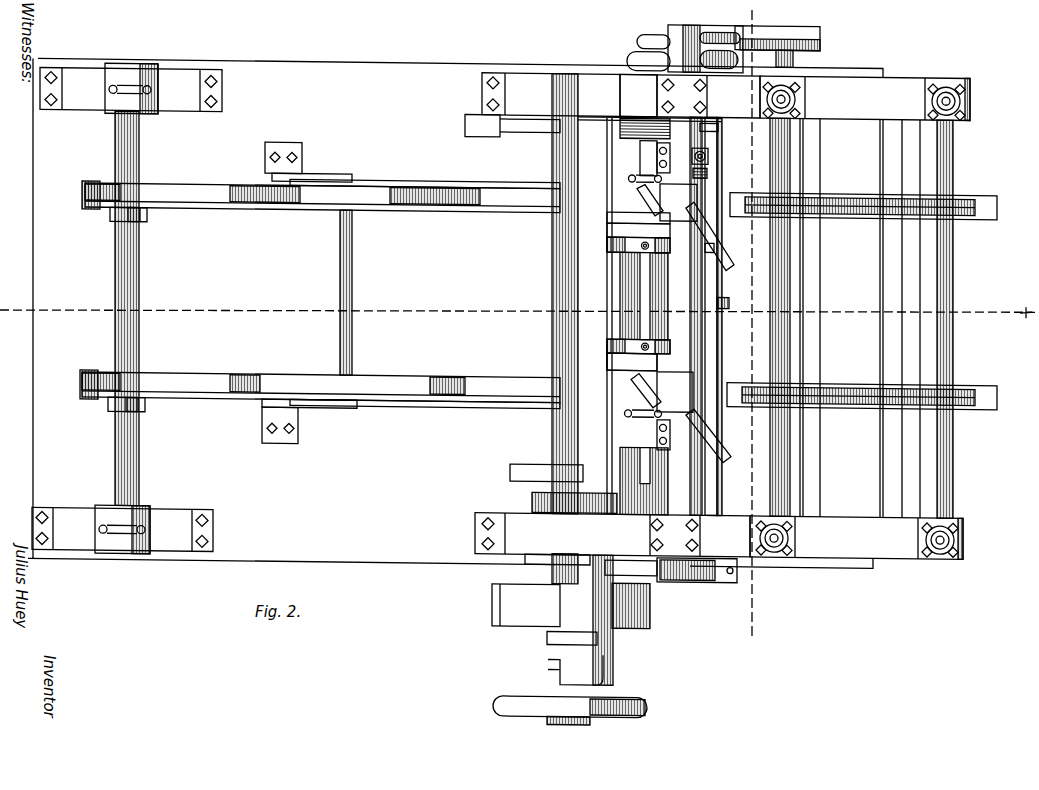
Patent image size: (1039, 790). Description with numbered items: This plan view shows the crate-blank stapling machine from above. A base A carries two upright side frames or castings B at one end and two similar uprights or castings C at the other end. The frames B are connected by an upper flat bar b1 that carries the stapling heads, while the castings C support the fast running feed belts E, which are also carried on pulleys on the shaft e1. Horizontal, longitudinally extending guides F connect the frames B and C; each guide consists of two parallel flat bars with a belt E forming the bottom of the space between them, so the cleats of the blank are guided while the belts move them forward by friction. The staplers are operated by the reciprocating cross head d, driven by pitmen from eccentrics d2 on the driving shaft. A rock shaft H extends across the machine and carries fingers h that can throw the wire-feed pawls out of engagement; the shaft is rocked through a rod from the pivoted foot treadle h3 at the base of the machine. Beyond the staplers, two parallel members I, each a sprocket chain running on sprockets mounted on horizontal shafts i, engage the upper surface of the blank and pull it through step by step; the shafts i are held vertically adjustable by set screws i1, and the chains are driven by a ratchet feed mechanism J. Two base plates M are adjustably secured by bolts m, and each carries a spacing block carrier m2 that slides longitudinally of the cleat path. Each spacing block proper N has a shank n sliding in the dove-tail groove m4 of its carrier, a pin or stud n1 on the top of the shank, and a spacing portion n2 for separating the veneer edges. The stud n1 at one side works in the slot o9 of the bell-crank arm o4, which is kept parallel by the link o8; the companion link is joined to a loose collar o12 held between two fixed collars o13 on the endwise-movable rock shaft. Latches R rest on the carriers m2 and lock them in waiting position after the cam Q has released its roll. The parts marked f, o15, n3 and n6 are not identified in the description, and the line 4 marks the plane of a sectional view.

The base A is at (52, 412).
The upright side frames B is at (617, 315).
The uprights C is at (187, 98).
The feed belts E is at (430, 183).
The guides F is at (276, 207).
The bracket f is at (206, 181).
The foot treadle h3 is at (527, 122).
The eccentrics d2 is at (640, 54).
The ratchet feed mechanism J is at (827, 34).
The latches R is at (668, 460).
The link o8 is at (678, 315).
The set screws i1 is at (930, 89).
The stud o15 is at (712, 135).
The loose collar o12 is at (710, 146).
The fixed collars o13 is at (708, 165).
The slot o9 is at (663, 159).
The arm o4 is at (675, 208).
The pin or stud n1 is at (640, 183).
The spacing block N is at (643, 192).
The spacing portion n2 is at (623, 192).
The dove-tail grooves m4 is at (627, 211).
The base plates M is at (608, 236).
The bolts m is at (653, 239).
The upper flat bar b1 is at (645, 282).
The shaft e1 is at (568, 346).
The spacing block carrier m2 is at (610, 360).
The rock shaft H is at (713, 228).
The fingers h is at (722, 259).
The cross head d is at (680, 274).
The shank n is at (715, 253).
The feed chains I is at (846, 188).
The pin n3 is at (672, 434).
The pin n6 is at (674, 448).
The cam Q is at (714, 447).
The sprocket shafts i is at (783, 475).
The section line 4 is at (764, 11).